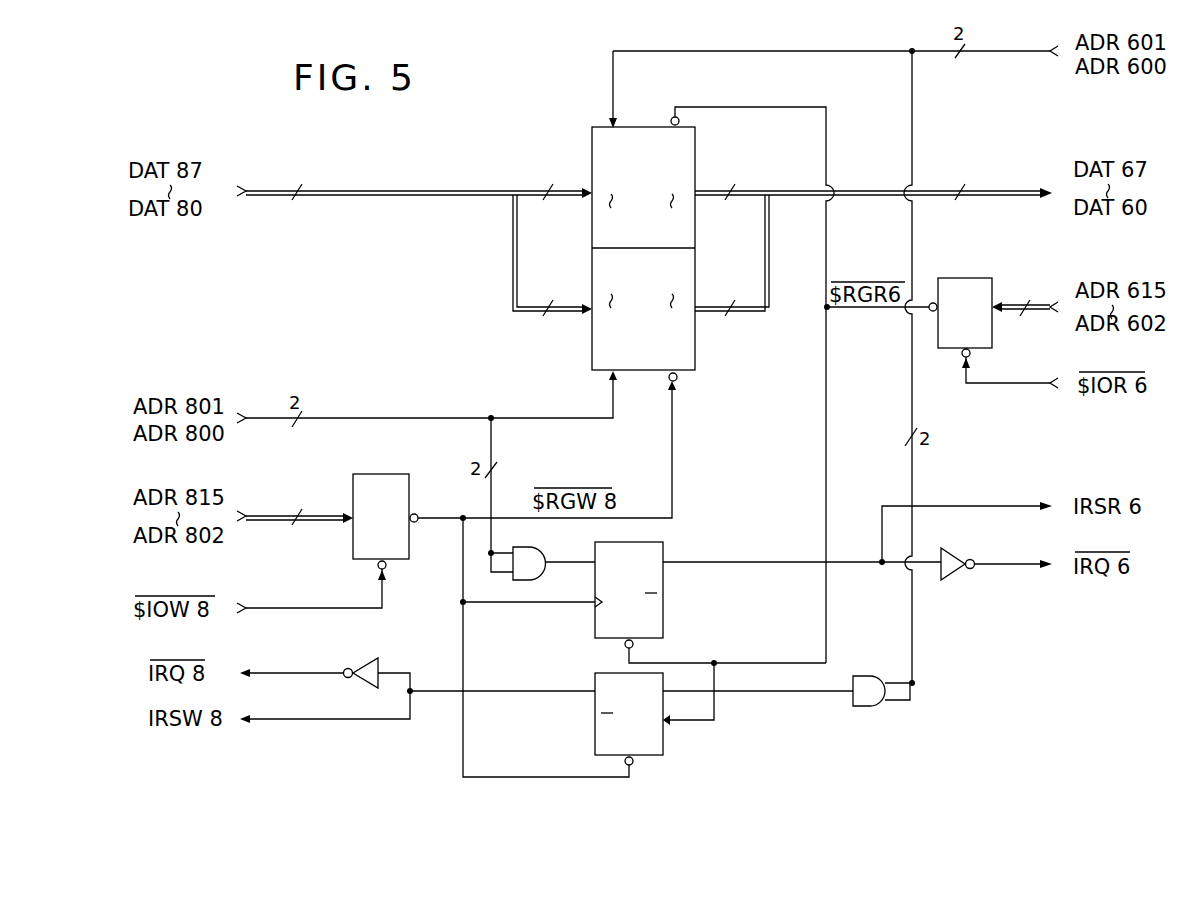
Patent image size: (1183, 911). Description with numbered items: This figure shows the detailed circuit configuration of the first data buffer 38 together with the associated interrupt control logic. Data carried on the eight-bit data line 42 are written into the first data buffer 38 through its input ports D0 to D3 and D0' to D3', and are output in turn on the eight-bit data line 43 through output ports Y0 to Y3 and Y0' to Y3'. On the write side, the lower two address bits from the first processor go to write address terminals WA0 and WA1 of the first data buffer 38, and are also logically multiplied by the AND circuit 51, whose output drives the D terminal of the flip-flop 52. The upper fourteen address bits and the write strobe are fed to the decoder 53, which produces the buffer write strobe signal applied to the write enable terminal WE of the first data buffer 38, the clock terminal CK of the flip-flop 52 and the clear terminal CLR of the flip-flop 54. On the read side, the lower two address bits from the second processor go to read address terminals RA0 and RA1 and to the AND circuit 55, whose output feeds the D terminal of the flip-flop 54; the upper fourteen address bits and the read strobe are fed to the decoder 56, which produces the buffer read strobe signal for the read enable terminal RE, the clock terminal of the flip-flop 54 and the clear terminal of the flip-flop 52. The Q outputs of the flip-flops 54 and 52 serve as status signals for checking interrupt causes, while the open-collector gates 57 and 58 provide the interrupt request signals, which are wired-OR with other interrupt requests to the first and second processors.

The first data buffer 38 is at (695, 142).
The data line 42 is at (396, 191).
The data line 43 is at (1006, 191).
The AND circuit 51 is at (540, 577).
The flip-flop 52 is at (663, 549).
The decoder 53 is at (398, 473).
The flip-flop 54 is at (594, 674).
The AND circuit 55 is at (872, 706).
The decoder 56 is at (972, 278).
The open-collector gate 57 is at (378, 660).
The open-collector gate 58 is at (960, 574).